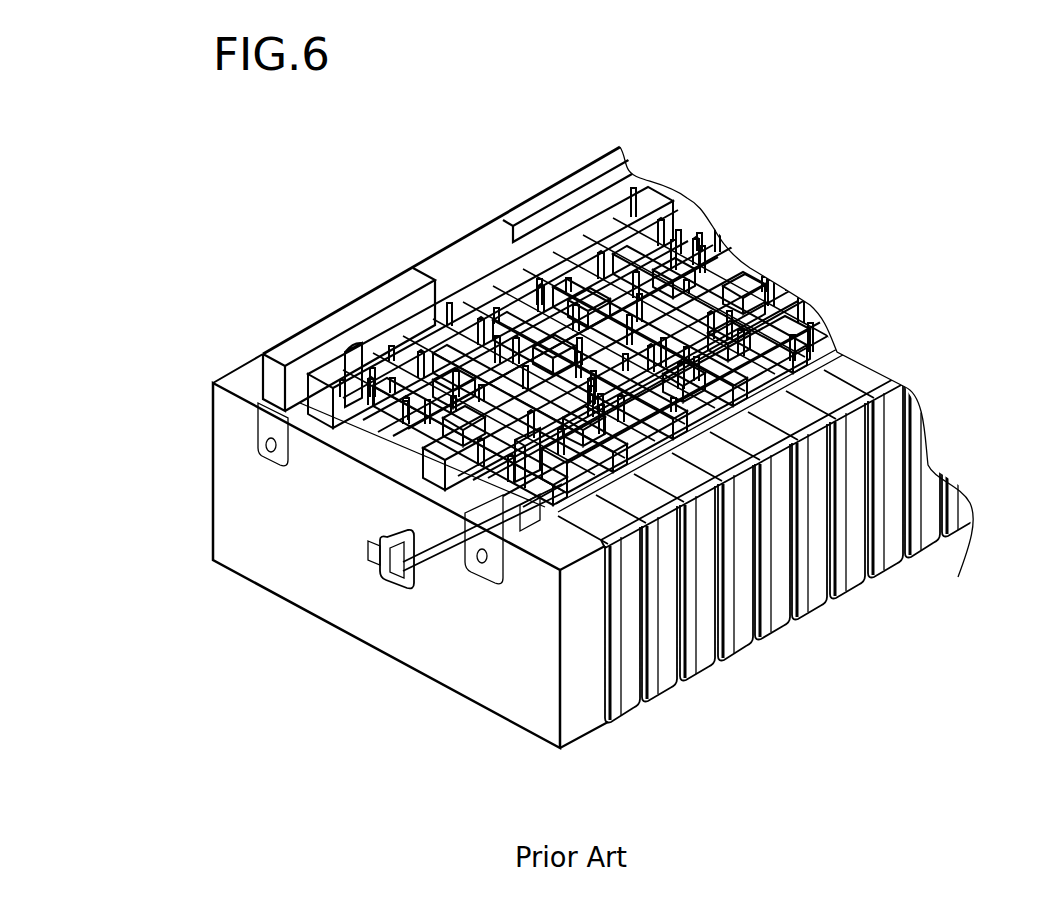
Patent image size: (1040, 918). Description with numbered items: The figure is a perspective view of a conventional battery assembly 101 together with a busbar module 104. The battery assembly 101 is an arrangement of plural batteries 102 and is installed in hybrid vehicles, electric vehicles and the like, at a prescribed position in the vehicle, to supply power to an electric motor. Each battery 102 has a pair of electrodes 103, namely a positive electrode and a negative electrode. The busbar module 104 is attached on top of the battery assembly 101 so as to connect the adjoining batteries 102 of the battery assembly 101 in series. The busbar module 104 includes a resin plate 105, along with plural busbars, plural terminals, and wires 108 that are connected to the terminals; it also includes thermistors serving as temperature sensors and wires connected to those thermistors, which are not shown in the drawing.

The battery assembly 101 is at (505, 688).
The battery 102 is at (630, 695).
The electrode 103 is at (533, 457).
The busbar module 104 is at (810, 327).
The resin plate 105 is at (827, 353).
The wire 108 is at (441, 556).